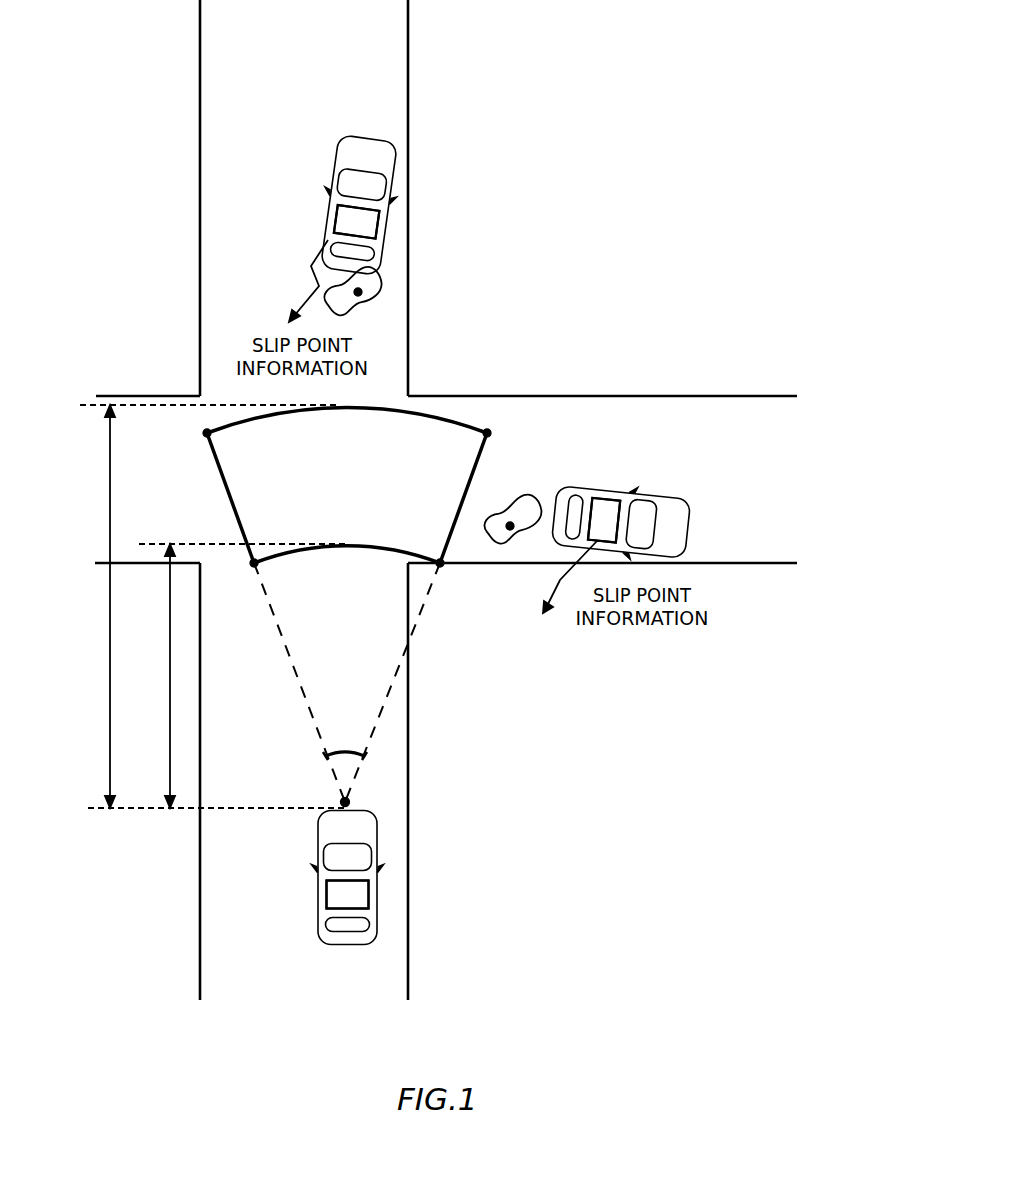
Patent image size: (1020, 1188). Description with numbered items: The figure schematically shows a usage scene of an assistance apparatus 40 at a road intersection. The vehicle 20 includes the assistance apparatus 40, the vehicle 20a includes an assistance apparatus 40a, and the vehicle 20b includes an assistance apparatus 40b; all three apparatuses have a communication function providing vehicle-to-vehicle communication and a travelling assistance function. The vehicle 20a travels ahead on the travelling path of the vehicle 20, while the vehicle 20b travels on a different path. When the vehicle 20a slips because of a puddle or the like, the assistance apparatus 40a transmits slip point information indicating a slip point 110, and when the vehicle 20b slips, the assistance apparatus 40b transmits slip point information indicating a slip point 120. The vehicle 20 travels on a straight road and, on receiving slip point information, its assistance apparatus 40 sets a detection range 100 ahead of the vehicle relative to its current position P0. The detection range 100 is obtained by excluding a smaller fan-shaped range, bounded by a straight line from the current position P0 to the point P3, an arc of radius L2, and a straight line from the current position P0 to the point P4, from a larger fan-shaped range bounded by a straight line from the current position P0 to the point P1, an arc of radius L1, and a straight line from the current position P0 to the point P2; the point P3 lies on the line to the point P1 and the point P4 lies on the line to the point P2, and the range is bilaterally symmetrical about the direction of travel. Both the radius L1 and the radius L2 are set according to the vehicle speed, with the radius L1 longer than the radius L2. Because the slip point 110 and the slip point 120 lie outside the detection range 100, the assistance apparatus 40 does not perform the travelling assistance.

The vehicle 20 is at (320, 839).
The assistance apparatus 40 is at (326, 897).
The vehicle 20a is at (366, 139).
The assistance apparatus 40a is at (331, 224).
The vehicle 20b is at (693, 533).
The assistance apparatus 40b is at (600, 486).
The slip point 110 is at (386, 290).
The slip point 120 is at (512, 537).
The detection range 100 is at (230, 485).
The current position P0 is at (344, 802).
The point P1 is at (206, 433).
The point P2 is at (483, 435).
The point P3 is at (254, 567).
The point P4 is at (440, 567).
The radius L1 is at (94, 606).
The radius L2 is at (154, 676).